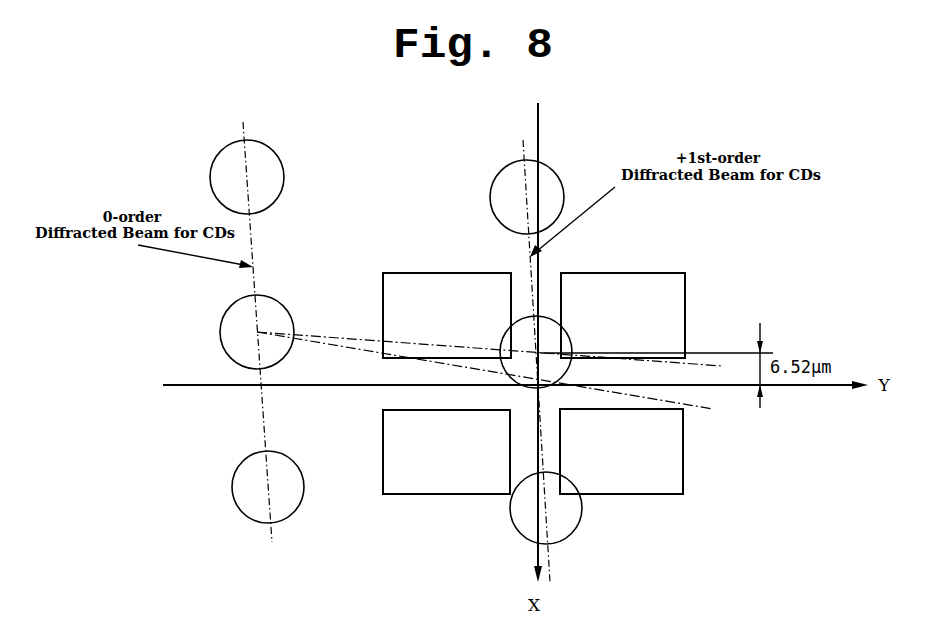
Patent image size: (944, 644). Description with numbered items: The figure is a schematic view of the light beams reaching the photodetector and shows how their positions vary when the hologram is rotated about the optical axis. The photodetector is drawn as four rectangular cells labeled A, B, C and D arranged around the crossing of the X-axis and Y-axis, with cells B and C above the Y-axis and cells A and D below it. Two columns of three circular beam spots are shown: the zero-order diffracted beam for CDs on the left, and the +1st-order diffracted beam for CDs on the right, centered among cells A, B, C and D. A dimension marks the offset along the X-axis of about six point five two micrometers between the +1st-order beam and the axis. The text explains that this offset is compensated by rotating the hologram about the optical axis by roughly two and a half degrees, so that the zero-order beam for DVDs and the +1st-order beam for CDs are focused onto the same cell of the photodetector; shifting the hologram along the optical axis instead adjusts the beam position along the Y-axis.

The photodetector segment A is at (446, 452).
The photodetector segment B is at (447, 315).
The photodetector segment C is at (623, 315).
The photodetector segment D is at (621, 451).